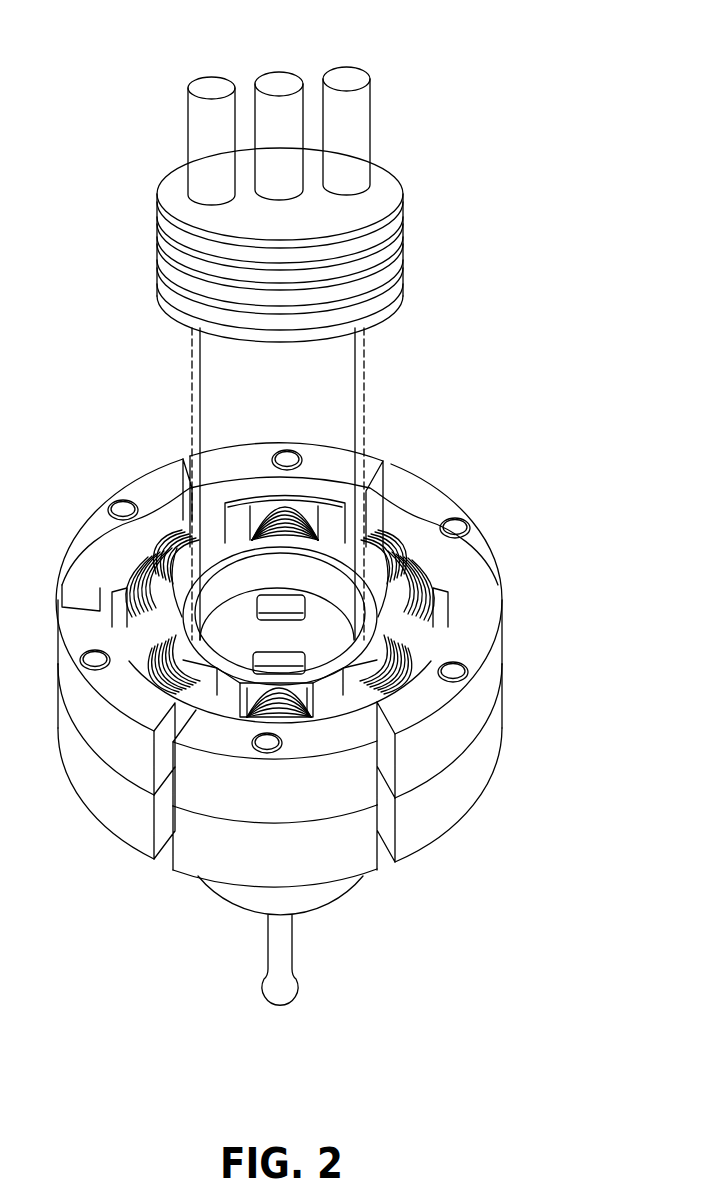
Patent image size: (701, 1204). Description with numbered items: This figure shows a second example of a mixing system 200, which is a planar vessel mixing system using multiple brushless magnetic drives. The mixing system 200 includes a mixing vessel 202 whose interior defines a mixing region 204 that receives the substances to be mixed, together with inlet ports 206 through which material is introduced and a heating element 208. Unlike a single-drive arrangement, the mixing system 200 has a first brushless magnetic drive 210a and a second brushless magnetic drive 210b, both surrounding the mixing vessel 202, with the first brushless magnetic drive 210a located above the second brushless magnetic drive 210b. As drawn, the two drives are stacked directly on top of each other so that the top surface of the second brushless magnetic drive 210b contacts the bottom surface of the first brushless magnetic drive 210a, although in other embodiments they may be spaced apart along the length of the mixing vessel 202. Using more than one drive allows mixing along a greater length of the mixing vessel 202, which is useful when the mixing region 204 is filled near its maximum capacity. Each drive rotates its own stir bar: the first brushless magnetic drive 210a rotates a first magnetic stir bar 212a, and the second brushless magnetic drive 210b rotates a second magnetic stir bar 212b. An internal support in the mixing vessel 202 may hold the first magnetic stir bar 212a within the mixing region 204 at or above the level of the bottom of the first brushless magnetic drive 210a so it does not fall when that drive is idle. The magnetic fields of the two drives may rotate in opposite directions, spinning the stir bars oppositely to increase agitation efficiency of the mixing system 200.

The mixing system 200 is at (126, 49).
The mixing vessel 202 is at (194, 384).
The mixing region 204 is at (238, 431).
The inlet ports 206 is at (343, 76).
The heating element 208 is at (369, 422).
The first brushless magnetic drive 210a is at (494, 668).
The second brushless magnetic drive 210b is at (494, 740).
The first magnetic stir bar 212a is at (284, 600).
The second magnetic stir bar 212b is at (288, 658).